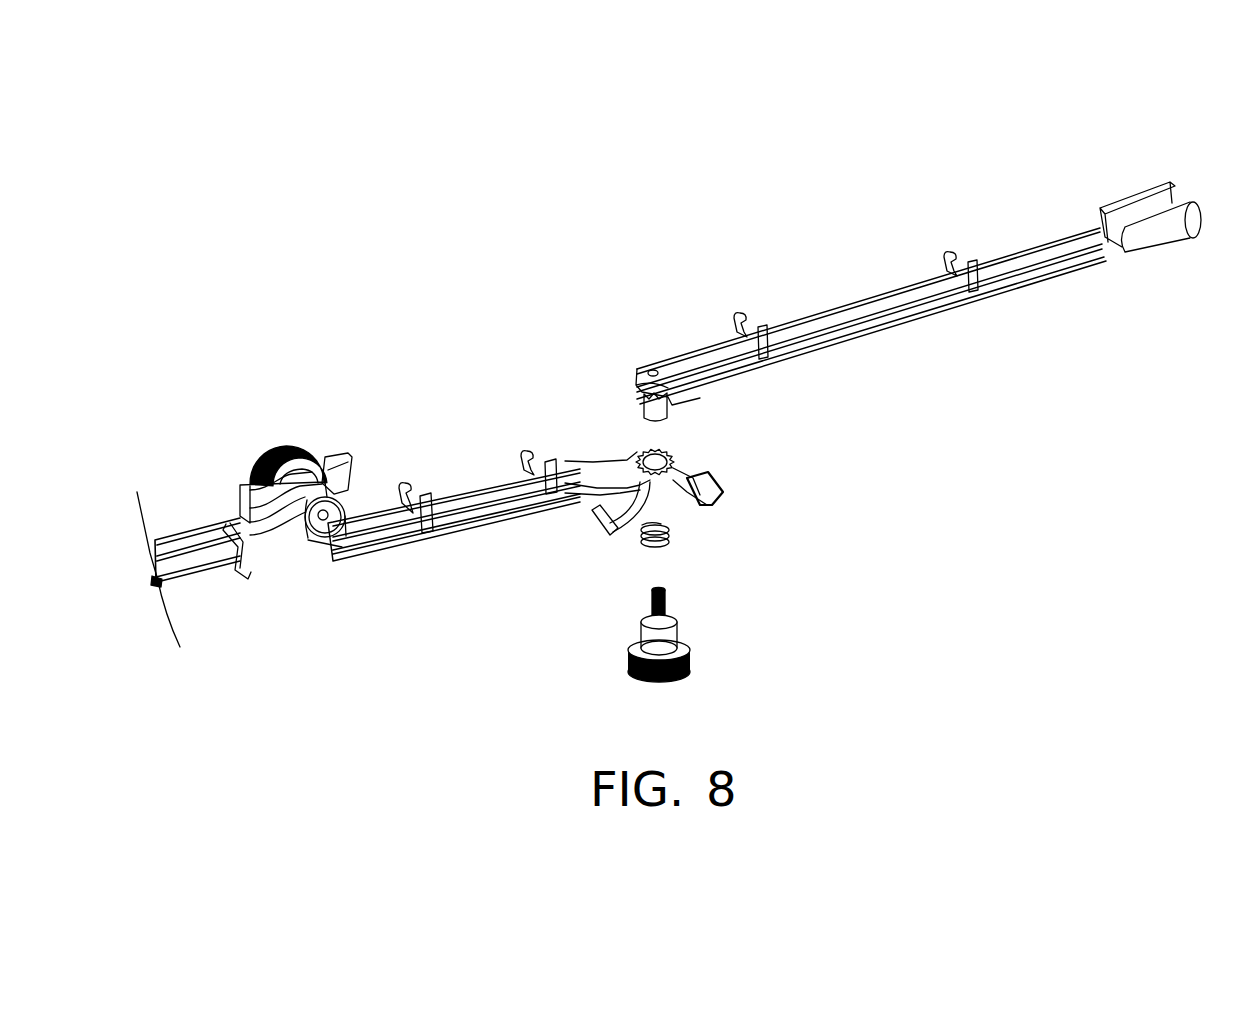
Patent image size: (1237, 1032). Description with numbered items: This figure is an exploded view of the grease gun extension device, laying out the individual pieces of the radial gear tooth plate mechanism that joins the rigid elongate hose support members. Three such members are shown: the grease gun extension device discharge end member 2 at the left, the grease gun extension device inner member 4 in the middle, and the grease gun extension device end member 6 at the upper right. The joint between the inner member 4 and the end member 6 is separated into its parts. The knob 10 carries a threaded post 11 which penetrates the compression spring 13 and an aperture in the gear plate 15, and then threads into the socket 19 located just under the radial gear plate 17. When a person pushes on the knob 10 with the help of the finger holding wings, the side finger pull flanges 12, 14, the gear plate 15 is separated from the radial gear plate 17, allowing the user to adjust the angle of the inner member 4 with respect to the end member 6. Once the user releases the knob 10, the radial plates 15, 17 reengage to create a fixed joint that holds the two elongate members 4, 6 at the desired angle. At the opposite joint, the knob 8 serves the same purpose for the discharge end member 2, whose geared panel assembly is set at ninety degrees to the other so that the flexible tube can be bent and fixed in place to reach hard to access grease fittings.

The grease gun extension device discharge end member 2 is at (176, 536).
The grease gun extension device inner member 4 is at (583, 352).
The grease gun extension device end member 6 is at (1080, 152).
The knob 8 is at (267, 447).
The knob 10 is at (700, 647).
The threaded post 11 is at (668, 605).
The side finger pull flange 12 is at (600, 527).
The compression spring 13 is at (674, 536).
The side finger pull flange 14 is at (717, 489).
The gear plate 15 is at (670, 455).
The radial gear plate 17 is at (637, 392).
The socket 19 is at (672, 406).